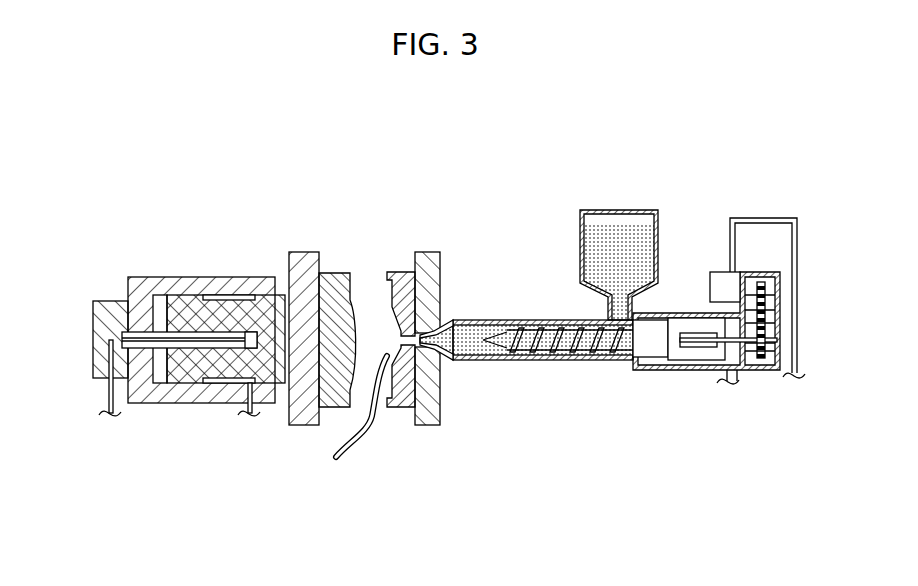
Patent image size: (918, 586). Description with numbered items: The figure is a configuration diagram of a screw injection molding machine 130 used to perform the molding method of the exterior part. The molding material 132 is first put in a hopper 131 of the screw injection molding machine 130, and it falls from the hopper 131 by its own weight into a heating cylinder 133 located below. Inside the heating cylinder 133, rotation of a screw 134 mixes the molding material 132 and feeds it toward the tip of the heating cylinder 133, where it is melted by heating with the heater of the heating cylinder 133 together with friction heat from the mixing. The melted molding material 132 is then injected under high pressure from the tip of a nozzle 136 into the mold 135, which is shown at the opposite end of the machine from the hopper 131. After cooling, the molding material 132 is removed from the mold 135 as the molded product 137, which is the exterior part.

The screw injection molding machine 130 is at (646, 139).
The hopper 131 is at (657, 243).
The molding material 132 is at (615, 256).
The heating cylinder 133 is at (513, 360).
The screw 134 is at (575, 340).
The mold 135 is at (398, 272).
The nozzle 136 is at (432, 321).
The molded product 137 is at (343, 450).